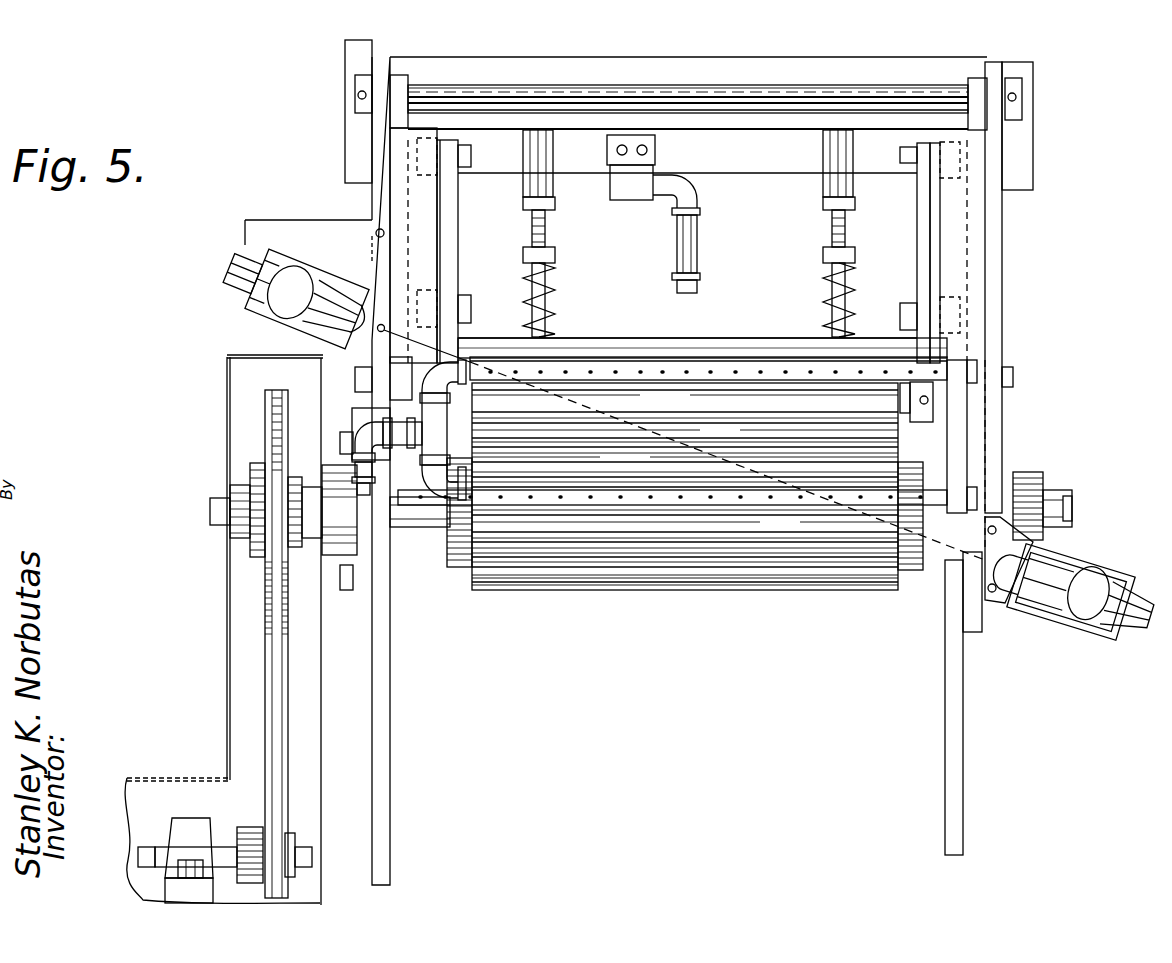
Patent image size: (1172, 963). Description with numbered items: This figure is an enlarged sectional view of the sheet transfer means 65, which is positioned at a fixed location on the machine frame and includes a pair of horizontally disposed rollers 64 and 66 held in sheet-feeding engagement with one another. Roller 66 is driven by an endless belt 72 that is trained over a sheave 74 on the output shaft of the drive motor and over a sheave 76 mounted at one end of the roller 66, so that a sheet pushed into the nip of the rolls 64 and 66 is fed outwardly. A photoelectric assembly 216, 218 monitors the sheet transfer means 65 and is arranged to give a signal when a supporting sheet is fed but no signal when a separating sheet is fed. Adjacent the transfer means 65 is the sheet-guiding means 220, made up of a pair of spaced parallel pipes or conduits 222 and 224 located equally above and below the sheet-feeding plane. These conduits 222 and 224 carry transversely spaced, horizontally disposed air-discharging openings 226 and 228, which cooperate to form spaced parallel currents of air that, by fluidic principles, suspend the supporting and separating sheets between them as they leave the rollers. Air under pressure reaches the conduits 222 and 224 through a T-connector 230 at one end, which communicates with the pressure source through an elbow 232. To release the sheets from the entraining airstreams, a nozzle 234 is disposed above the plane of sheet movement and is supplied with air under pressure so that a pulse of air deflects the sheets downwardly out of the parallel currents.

The roller 64 is at (600, 580).
The sheet transfer means 65 is at (938, 445).
The roller 66 is at (790, 363).
The endless belt 72 is at (272, 676).
The sheave 74 is at (267, 817).
The sheave 76 is at (265, 422).
The photoelectric assembly 216 is at (243, 301).
The photoelectric assembly 218 is at (1057, 630).
The sheet-guiding means 220 is at (672, 352).
The conduit 222 is at (705, 363).
The conduit 224 is at (535, 497).
The air-discharging openings 226 is at (632, 372).
The air-discharging openings 228 is at (668, 497).
The T-connector 230 is at (467, 421).
The elbow 232 is at (358, 425).
The nozzle 234 is at (683, 247).